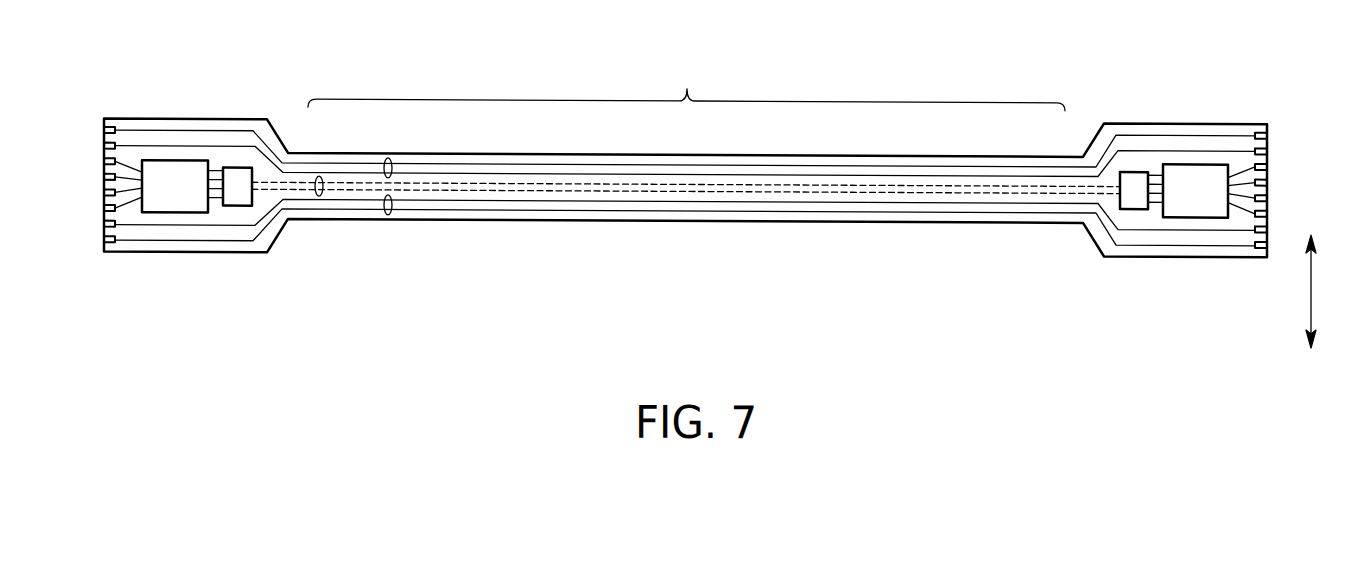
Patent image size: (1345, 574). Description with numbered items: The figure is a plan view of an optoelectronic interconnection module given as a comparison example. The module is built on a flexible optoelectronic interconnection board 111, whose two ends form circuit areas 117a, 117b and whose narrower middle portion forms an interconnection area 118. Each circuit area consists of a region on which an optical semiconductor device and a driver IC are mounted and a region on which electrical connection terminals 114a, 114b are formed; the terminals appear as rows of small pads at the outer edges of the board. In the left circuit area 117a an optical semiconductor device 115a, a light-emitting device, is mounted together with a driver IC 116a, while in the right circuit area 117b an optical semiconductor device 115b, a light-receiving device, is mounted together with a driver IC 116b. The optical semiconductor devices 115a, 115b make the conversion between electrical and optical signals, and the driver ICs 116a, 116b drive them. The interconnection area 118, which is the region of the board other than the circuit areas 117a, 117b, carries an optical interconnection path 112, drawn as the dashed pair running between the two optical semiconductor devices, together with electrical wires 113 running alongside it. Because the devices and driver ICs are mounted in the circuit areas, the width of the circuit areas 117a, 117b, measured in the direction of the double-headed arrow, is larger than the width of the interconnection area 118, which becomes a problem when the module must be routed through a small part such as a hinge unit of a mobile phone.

The flexible optoelectronic interconnection board 111 is at (688, 262).
The optical interconnection path 112 is at (323, 192).
The electrical wires 113 is at (392, 170).
The electrical connection terminals 114a is at (99, 120).
The electrical connection terminals 114b is at (1271, 120).
The optical semiconductor device (light-emitting device) 115a is at (238, 198).
The optical semiconductor device (light-receiving device) 115b is at (1135, 196).
The driver IC 116a is at (175, 200).
The driver IC 116b is at (1205, 201).
The circuit area 117a is at (277, 106).
The circuit area 117b is at (1268, 106).
The interconnection area 118 is at (686, 84).